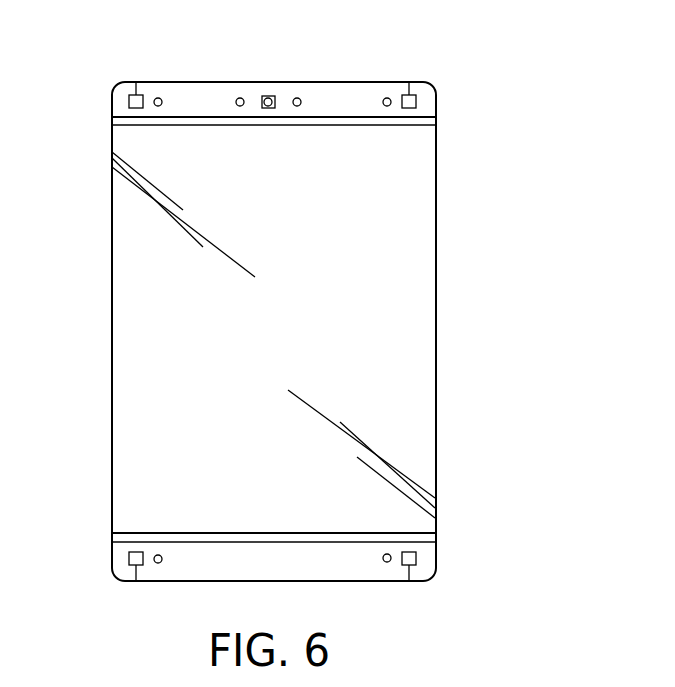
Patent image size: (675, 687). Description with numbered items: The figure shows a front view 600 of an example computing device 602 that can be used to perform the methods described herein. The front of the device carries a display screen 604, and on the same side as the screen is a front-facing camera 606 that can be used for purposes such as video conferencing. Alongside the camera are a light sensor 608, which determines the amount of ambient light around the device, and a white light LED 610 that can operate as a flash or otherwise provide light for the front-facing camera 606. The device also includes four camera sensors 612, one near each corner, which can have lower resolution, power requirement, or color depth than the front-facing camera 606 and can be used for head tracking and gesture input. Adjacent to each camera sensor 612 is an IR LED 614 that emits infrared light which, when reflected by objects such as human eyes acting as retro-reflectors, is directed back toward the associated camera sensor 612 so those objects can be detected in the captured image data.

The front view 600 is at (605, 138).
The computing device 602 is at (115, 297).
The display screen 604 is at (115, 209).
The front-facing camera 606 is at (268, 94).
The light sensor 608 is at (240, 98).
The white light LED 610 is at (297, 98).
The camera sensors 612 is at (136, 82).
The IR LED 614 is at (158, 98).